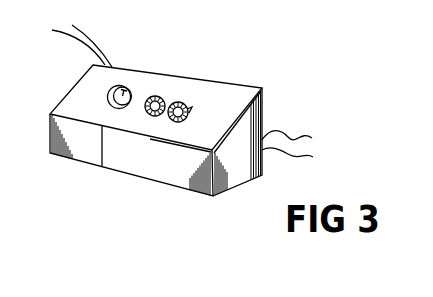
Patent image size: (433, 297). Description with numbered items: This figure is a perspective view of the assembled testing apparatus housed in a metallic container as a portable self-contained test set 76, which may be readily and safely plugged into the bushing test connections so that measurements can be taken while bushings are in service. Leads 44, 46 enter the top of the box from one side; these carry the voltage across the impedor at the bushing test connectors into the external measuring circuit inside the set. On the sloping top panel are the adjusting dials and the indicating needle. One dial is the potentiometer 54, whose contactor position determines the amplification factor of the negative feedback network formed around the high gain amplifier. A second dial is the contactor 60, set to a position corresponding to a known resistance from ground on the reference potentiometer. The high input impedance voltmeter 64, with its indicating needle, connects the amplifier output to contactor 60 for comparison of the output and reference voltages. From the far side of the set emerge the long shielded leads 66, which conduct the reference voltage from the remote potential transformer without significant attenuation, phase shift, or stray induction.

The lead 44 is at (97, 22).
The lead 46 is at (77, 44).
The potentiometer 54 is at (153, 121).
The contactor 60 is at (182, 126).
The high input impedance voltmeter 64 is at (107, 101).
The long shielded leads 66 is at (290, 136).
The portable self-contained test set 76 is at (203, 78).